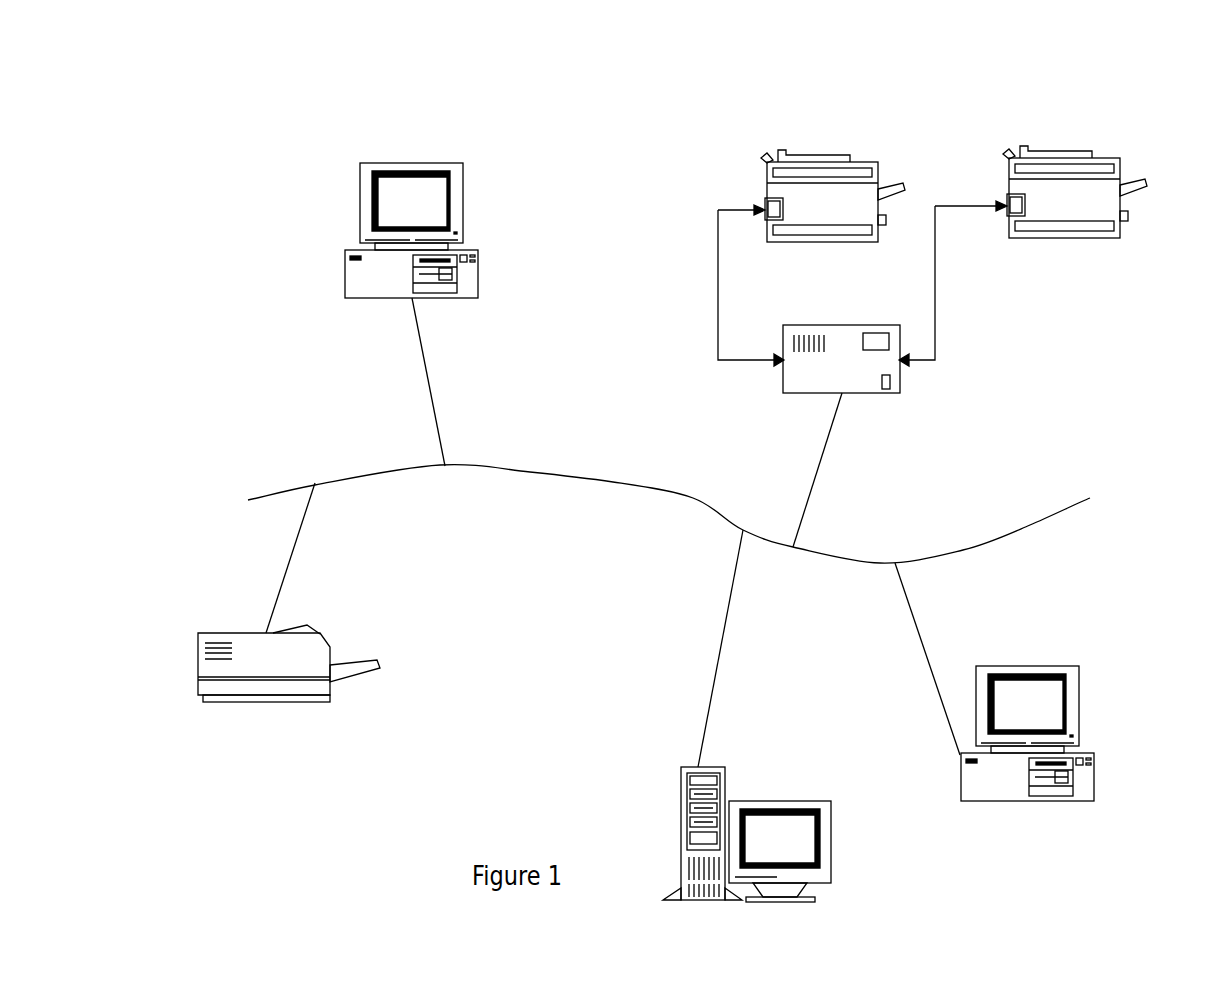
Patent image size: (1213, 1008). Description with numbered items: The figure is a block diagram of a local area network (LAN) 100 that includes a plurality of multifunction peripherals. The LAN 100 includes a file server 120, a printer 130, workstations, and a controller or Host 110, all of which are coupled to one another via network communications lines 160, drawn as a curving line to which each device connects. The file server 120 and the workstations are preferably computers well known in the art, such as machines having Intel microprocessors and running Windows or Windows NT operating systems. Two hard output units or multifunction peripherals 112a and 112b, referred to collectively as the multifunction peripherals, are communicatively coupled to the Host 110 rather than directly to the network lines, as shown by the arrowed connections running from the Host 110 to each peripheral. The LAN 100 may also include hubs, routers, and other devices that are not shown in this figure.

The local area network 100 is at (277, 420).
The controller or Host 110 is at (842, 325).
The multifunction peripheral 112a is at (833, 145).
The multifunction peripheral 112b is at (1075, 142).
The file server 120 is at (780, 800).
The printer 130 is at (263, 702).
The network communications lines 160 is at (612, 483).